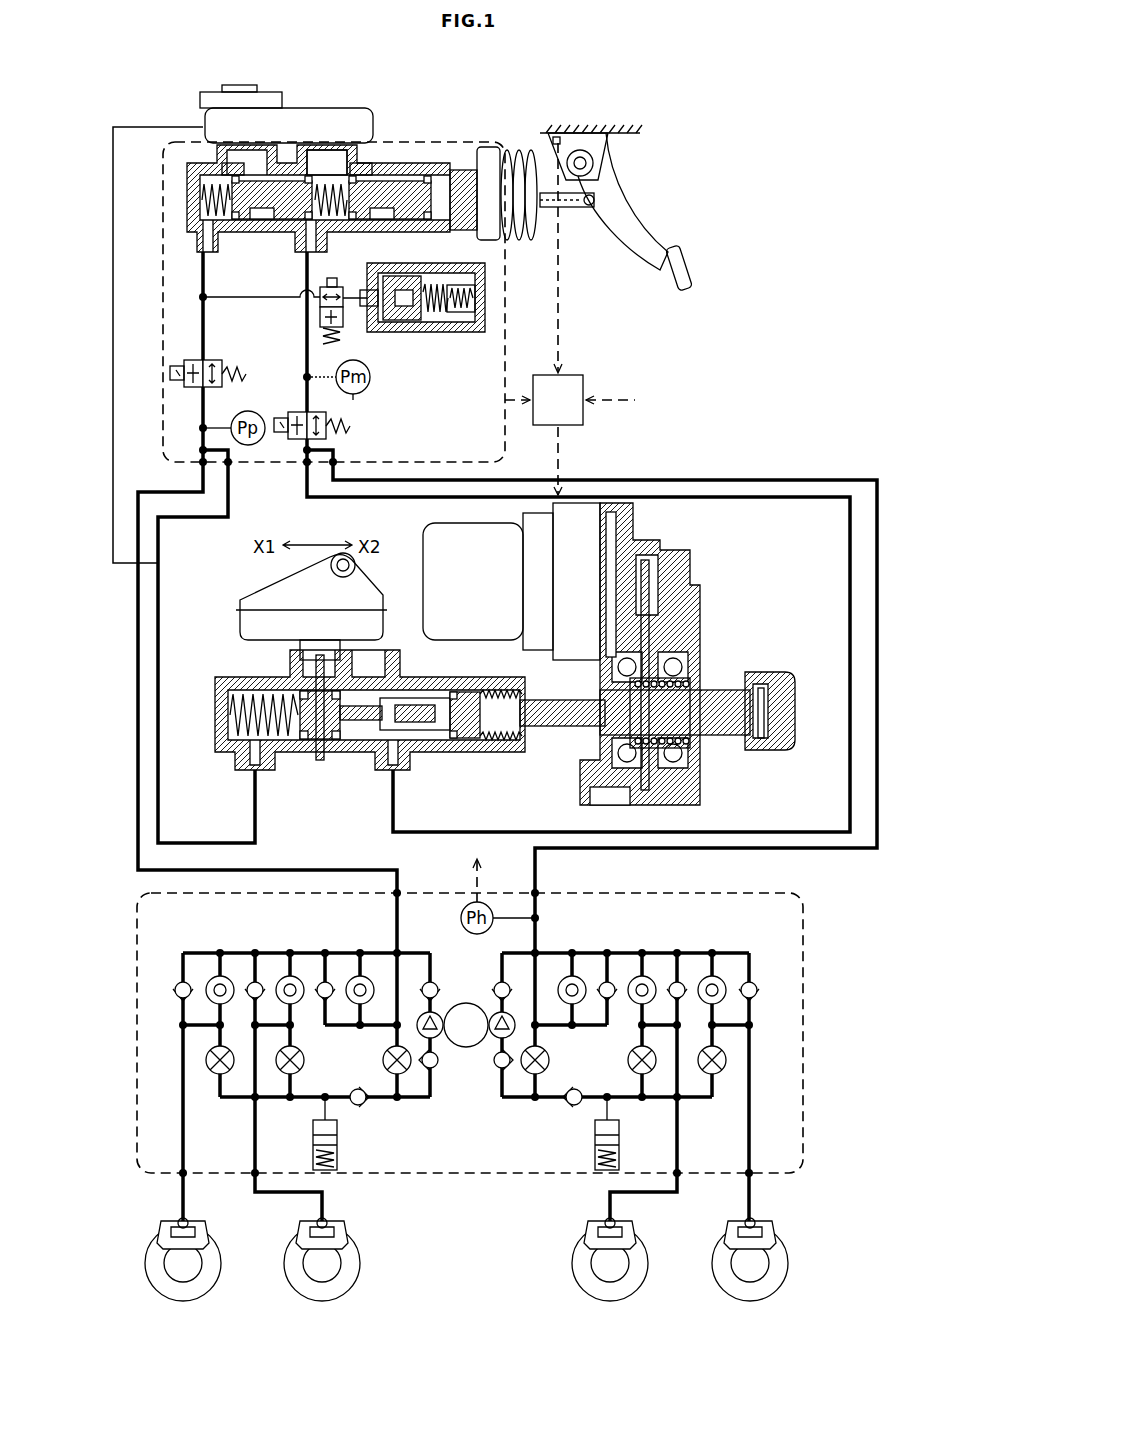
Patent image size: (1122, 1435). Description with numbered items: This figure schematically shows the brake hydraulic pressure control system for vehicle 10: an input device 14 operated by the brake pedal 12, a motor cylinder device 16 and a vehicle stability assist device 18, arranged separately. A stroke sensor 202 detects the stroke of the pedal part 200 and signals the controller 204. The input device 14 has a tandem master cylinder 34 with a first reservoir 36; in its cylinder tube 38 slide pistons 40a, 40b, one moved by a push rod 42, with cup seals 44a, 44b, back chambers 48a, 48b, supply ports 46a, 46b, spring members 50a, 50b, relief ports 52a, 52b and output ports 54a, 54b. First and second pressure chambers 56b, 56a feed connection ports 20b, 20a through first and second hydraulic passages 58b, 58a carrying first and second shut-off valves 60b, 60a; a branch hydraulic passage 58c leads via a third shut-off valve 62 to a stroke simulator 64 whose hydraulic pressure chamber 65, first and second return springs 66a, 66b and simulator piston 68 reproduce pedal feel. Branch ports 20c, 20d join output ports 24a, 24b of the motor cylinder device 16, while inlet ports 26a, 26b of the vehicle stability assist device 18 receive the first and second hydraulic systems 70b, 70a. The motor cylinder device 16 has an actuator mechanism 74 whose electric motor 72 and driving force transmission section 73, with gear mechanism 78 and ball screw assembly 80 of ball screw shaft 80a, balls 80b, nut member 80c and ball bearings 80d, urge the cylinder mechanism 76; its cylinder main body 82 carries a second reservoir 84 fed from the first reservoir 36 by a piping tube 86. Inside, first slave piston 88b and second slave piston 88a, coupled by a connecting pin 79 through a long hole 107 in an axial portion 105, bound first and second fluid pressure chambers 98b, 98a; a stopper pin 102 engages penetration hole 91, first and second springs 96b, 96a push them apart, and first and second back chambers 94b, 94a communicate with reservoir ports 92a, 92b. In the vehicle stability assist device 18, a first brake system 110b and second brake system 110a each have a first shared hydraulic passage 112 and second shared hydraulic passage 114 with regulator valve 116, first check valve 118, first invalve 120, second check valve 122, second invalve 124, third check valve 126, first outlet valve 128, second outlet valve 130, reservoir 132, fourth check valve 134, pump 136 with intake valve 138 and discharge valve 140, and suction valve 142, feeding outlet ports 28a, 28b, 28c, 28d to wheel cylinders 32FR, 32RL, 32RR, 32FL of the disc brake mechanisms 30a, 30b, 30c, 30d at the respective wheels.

The brake hydraulic pressure control system for vehicle 10 is at (716, 142).
The brake pedal 12 is at (706, 276).
The input device 14 is at (505, 330).
The motor cylinder device 16 is at (684, 529).
The vehicle stability assist device 18 is at (728, 886).
The connection port 20a is at (305, 466).
The connection port 20b is at (198, 466).
The branch port 20c is at (333, 482).
The branch port 20d is at (229, 488).
The output port 24a is at (392, 770).
The output port 24b is at (240, 762).
The inlet port 26a is at (537, 893).
The inlet port 26b is at (399, 892).
The first outlet port 28a is at (750, 1180).
The second outlet port 28b is at (678, 1180).
The third outlet port 28c is at (255, 1180).
The fourth outlet port 28d is at (182, 1180).
The disc brake mechanism 30a is at (796, 1295).
The disc brake mechanism 30b is at (656, 1295).
The disc brake mechanism 30c is at (368, 1295).
The disc brake mechanism 30d is at (228, 1295).
The wheel cylinder 32FL is at (210, 1232).
The wheel cylinder 32RR is at (349, 1232).
The wheel cylinder 32RL is at (637, 1232).
The wheel cylinder 32FR is at (777, 1232).
The tandem master cylinder 34 is at (412, 160).
The first reservoir 36 is at (306, 110).
The cylinder tube 38 is at (452, 170).
The piston 40a is at (405, 180).
The piston 40b is at (240, 180).
The push rod 42 is at (578, 208).
The cup seal 44a is at (290, 222).
The cup seal 44b is at (232, 222).
The supply port 46a is at (347, 195).
The supply port 46b is at (230, 195).
The back chamber 48a is at (420, 222).
The back chamber 48b is at (265, 222).
The spring member 50a is at (323, 150).
The spring member 50b is at (206, 140).
The relief port 52a is at (350, 162).
The relief port 52b is at (224, 160).
The output port 54a is at (313, 252).
The output port 54b is at (200, 254).
The second pressure chamber 56a is at (334, 200).
The first pressure chamber 56b is at (216, 200).
The second hydraulic passage 58a is at (305, 366).
The first hydraulic passage 58b is at (185, 367).
The branch hydraulic passage 58c is at (253, 300).
The second shut-off valve 60a is at (332, 432).
The first shut-off valve 60b is at (210, 358).
The third shut-off valve 62 is at (342, 320).
The stroke simulator 64 is at (498, 304).
The hydraulic pressure chamber 65 is at (377, 306).
The first return spring 66a is at (462, 322).
The second return spring 66b is at (433, 322).
The simulator piston 68 is at (400, 322).
The second hydraulic system 70a is at (630, 474).
The first hydraulic system 70b is at (126, 714).
The electric motor 72 is at (432, 522).
The driving force transmission section 73 is at (768, 612).
The actuator mechanism 74 is at (805, 732).
The cylinder mechanism 76 is at (205, 741).
The gear mechanism 78 is at (688, 640).
The connecting pin 79 is at (400, 760).
The ball screw assembly 80 is at (735, 700).
The ball screw shaft 80a is at (752, 740).
The balls 80b is at (690, 700).
The nut member 80c is at (695, 748).
The ball bearings 80d is at (672, 790).
The cylinder main body 82 is at (362, 752).
The second reservoir 84 is at (240, 598).
The piping tube 86 is at (110, 372).
The second slave piston 88a is at (470, 745).
The first slave piston 88b is at (312, 740).
The penetration hole 91 is at (325, 752).
The reservoir port 92a is at (372, 655).
The reservoir port 92b is at (302, 662).
The second back chamber 94a is at (530, 755).
The first back chamber 94b is at (338, 762).
The second spring 96a is at (485, 740).
The first spring 96b is at (248, 690).
The second fluid pressure chamber 98a is at (450, 750).
The first fluid pressure chamber 98b is at (238, 702).
The stopper pin 102 is at (345, 722).
The axial portion 105 is at (425, 732).
The long hole 107 is at (392, 690).
The second brake system 110a is at (742, 942).
The first brake system 110b is at (199, 940).
The first shared hydraulic passage 112 is at (252, 950).
The second shared hydraulic passage 114 is at (270, 1100).
The regulator valve 116 is at (362, 975).
The first check valve 118 is at (325, 978).
The first invalve 120 is at (217, 975).
The second check valve 122 is at (183, 980).
The second invalve 124 is at (290, 975).
The third check valve 126 is at (255, 978).
The first outlet valve 128 is at (215, 1076).
The second outlet valve 130 is at (305, 1060).
The reservoir 132 is at (339, 1150).
The fourth check valve 134 is at (360, 1106).
The pump 136 is at (437, 1040).
The intake valve 138 is at (497, 1042).
The discharge valve 140 is at (438, 985).
The suction valve 142 is at (426, 1070).
The pedal part 200 is at (634, 230).
The stroke sensor 202 is at (550, 141).
The controller 204 is at (585, 382).